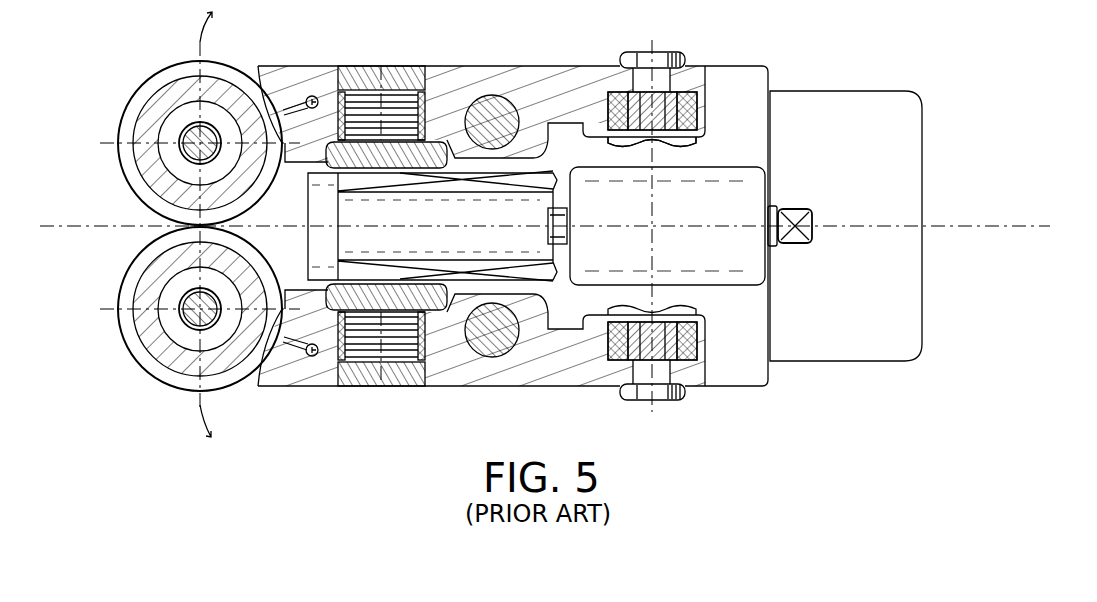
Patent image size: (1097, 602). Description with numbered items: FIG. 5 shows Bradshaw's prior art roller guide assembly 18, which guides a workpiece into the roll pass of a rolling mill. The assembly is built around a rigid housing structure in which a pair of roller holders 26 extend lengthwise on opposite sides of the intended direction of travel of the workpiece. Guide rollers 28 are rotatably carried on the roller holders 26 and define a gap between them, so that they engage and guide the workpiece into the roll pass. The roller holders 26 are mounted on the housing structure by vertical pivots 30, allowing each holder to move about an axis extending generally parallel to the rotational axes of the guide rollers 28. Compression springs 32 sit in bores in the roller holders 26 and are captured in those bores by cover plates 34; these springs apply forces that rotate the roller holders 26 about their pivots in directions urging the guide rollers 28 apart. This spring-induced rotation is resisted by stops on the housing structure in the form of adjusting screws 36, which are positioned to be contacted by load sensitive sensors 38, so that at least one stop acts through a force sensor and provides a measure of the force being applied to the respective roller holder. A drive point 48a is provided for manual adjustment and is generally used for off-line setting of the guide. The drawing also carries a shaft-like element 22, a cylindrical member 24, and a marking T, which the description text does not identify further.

The roller guide assembly 18 is at (790, 68).
The shaft with ramps 22 is at (426, 168).
The cylindrical hub 24 is at (590, 314).
The roller holder 26 is at (455, 82).
The guide roller 28 is at (176, 82).
The vertical pivot 30 is at (505, 97).
The compression spring 32 is at (346, 92).
The cover plate 34 is at (396, 80).
The adjusting screw 36 is at (668, 141).
The load sensitive sensor 38 is at (690, 107).
The drive point 48a is at (836, 208).
The torque direction T is at (531, 231).